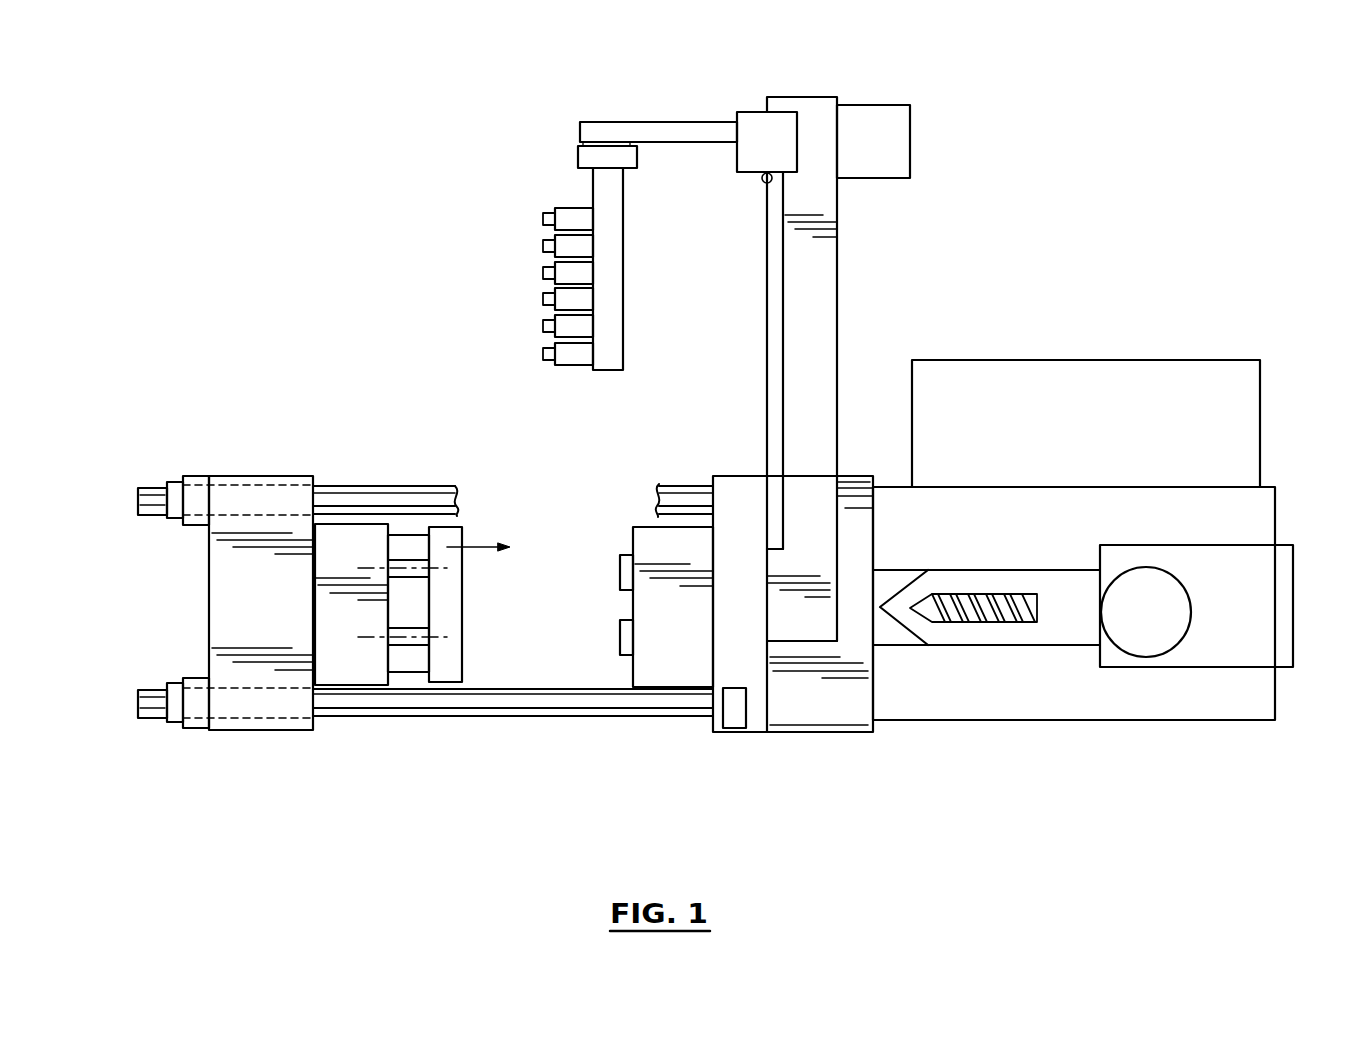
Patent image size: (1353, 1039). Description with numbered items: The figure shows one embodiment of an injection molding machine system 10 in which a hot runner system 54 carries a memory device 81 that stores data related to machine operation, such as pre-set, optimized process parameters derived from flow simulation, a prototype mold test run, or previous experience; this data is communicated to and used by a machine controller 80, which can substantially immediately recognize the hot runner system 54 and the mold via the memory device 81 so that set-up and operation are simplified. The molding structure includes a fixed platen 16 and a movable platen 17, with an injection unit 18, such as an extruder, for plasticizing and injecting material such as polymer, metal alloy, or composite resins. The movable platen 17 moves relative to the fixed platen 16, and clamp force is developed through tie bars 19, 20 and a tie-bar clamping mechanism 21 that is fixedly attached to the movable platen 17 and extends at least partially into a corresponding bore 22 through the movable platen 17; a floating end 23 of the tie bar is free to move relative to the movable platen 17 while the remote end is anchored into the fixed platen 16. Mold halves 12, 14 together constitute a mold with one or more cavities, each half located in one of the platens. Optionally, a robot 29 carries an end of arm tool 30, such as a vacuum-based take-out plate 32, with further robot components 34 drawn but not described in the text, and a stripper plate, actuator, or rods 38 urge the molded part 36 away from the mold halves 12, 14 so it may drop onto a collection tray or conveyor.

The injection molding machine system 10 is at (253, 138).
The mold half 12 is at (652, 668).
The mold half 14 is at (367, 667).
The fixed platen 16 is at (820, 708).
The movable platen 17 is at (287, 478).
The injection unit 18 is at (1023, 710).
The tie bar 19 is at (530, 702).
The tie bar 20 is at (427, 493).
The tie-bar clamping mechanism 21 is at (198, 475).
The bore 22 is at (242, 500).
The floating end 23 is at (145, 487).
The robot 29 is at (752, 112).
The end of arm tool 30 is at (608, 313).
The vacuum-based take-out plate 32 is at (543, 247).
The robot actuator 34 is at (567, 208).
The molded part 36 is at (543, 327).
The rods 38 is at (447, 608).
The hot runner system 54 is at (727, 475).
The machine controller 80 is at (1078, 360).
The memory device 81 is at (748, 707).